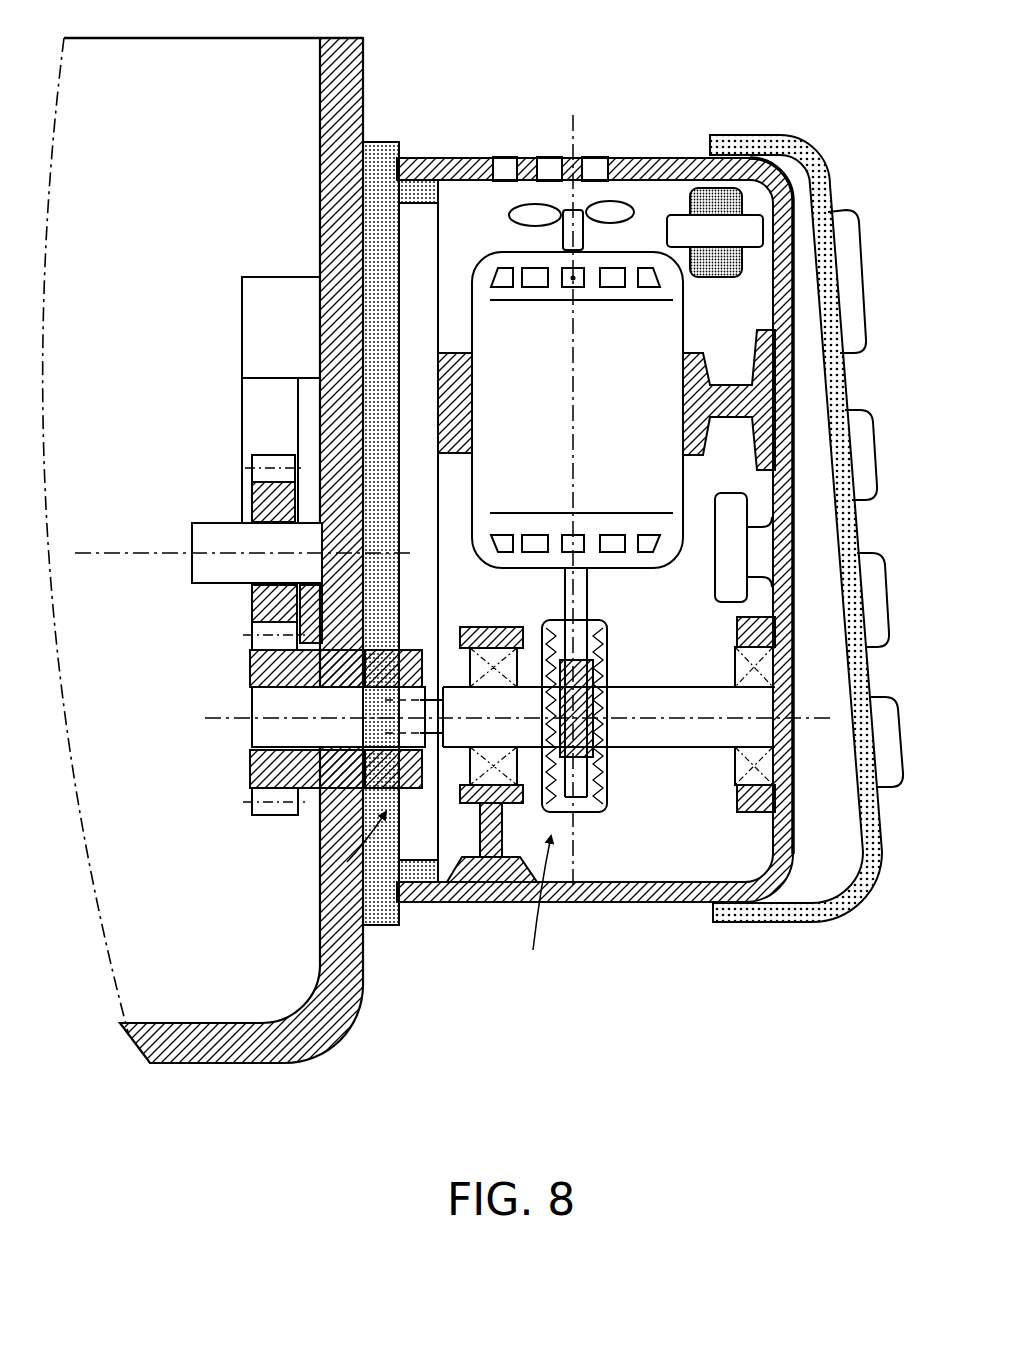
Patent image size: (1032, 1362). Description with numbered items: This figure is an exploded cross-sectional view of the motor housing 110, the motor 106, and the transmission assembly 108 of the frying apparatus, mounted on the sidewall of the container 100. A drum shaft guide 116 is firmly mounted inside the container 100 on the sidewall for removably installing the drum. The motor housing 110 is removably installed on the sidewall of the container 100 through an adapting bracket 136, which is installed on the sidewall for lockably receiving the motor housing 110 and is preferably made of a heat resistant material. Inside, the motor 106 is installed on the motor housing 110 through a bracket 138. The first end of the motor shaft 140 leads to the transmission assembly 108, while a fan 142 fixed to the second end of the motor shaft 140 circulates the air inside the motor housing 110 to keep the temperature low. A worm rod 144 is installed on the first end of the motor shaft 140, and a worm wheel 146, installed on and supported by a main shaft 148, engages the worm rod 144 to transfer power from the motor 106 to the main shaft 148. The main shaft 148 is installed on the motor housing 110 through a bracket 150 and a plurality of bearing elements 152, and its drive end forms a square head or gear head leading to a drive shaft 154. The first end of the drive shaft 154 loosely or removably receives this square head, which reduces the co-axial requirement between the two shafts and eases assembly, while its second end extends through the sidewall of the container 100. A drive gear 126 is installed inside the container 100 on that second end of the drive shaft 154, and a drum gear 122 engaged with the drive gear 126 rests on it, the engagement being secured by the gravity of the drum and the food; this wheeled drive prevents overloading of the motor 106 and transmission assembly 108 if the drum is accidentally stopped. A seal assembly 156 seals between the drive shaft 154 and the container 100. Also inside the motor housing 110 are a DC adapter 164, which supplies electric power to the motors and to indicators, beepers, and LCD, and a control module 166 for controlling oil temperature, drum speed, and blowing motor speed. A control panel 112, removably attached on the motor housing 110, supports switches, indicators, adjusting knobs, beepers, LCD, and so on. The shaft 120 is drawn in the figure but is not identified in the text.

The container 100 is at (320, 166).
The motor 106 is at (550, 362).
The transmission assembly 108 is at (533, 921).
The motor housing 110 is at (470, 158).
The control panel 112 is at (877, 830).
The drum shaft guide 116 is at (290, 343).
The drive shaft 120 is at (255, 563).
The drum gear 122 is at (250, 483).
The drive gear 126 is at (298, 795).
The adapting bracket 136 is at (393, 143).
The bracket 138 is at (683, 412).
The motor shaft 140 is at (580, 588).
The fan 142 is at (612, 212).
The worm rod 144 is at (608, 752).
The worm wheel 146 is at (590, 815).
The main shaft 148 is at (690, 731).
The bracket 150 is at (483, 882).
The bearing elements 152 is at (752, 805).
The drive shaft 154 is at (290, 735).
The seal assembly 156 is at (327, 875).
The DC adapter 164 is at (723, 186).
The control module 166 is at (732, 550).